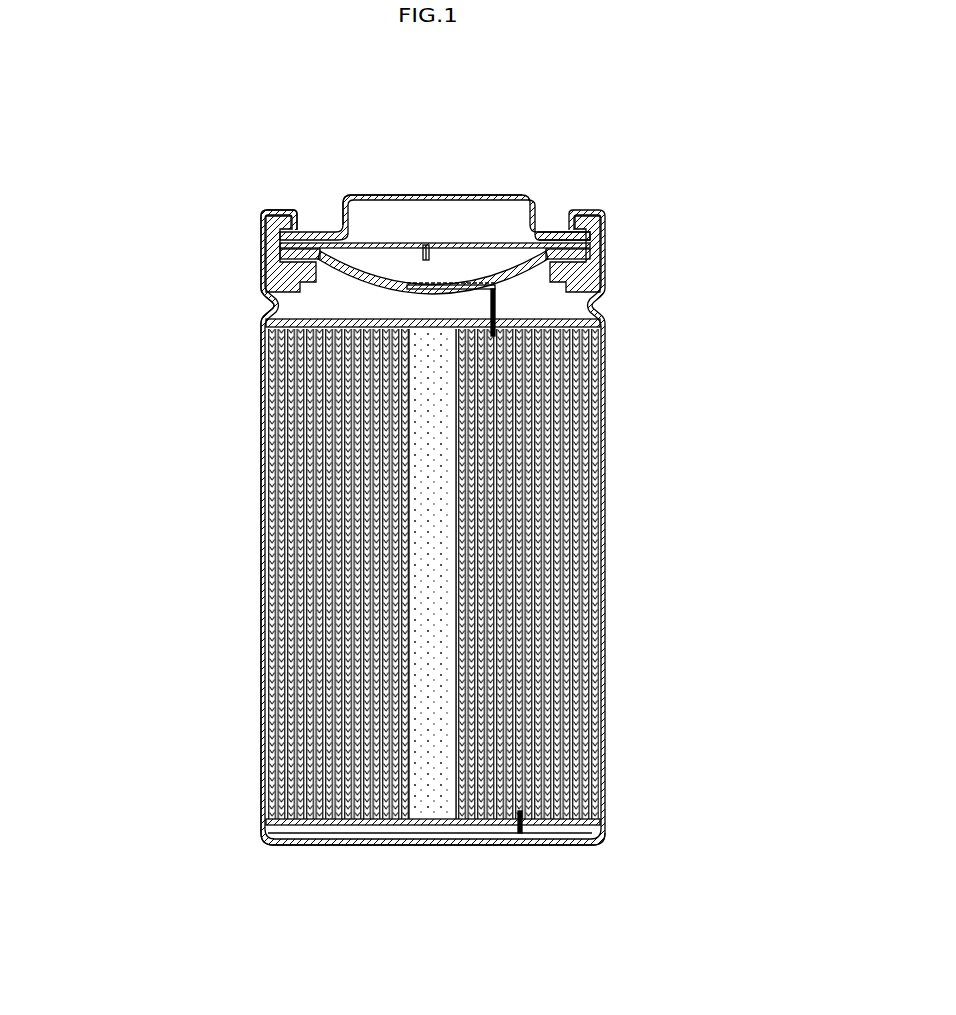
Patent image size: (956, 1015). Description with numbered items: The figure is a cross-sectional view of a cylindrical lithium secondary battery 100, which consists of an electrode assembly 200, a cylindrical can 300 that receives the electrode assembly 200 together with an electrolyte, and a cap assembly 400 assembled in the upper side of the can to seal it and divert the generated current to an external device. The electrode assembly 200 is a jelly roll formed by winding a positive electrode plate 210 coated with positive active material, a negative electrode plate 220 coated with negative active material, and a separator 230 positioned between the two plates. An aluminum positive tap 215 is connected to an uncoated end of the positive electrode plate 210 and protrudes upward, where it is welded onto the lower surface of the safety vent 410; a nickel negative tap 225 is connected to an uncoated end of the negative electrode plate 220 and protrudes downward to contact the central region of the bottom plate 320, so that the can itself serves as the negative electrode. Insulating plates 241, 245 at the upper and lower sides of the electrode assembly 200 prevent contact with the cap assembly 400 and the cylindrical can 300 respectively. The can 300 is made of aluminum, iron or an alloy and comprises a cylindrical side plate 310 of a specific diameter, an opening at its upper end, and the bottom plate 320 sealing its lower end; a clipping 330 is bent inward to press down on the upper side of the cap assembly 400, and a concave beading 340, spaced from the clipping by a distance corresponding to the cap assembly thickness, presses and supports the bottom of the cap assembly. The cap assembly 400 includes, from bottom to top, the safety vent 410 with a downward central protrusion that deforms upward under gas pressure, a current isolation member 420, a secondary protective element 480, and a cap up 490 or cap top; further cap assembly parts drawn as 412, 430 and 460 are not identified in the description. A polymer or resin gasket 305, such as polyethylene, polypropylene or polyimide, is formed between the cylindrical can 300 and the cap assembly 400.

The cylindrical secondary battery 100 is at (630, 175).
The electrode assembly 200 is at (708, 305).
The positive electrode plate 210 is at (600, 445).
The positive tap 215 is at (586, 296).
The negative electrode plate 220 is at (600, 372).
The negative tap 225 is at (517, 843).
The separator 230 is at (600, 415).
The insulating plate 241 is at (600, 322).
The insulating plate 245 is at (590, 833).
The cylindrical can 300 is at (158, 283).
The gasket 305 is at (281, 208).
The cylindrical side plate 310 is at (262, 365).
The bottom plate 320 is at (290, 858).
The clipping 330 is at (258, 212).
The beading 340 is at (274, 305).
The cap assembly 400 is at (530, 118).
The safety vent 410 is at (372, 262).
The vent hole 412 is at (546, 230).
The current isolation member 420 is at (488, 198).
The vent plate 430 is at (452, 252).
The notch 460 is at (427, 245).
The secondary protective element 480 is at (518, 200).
The cap up 490 is at (345, 197).